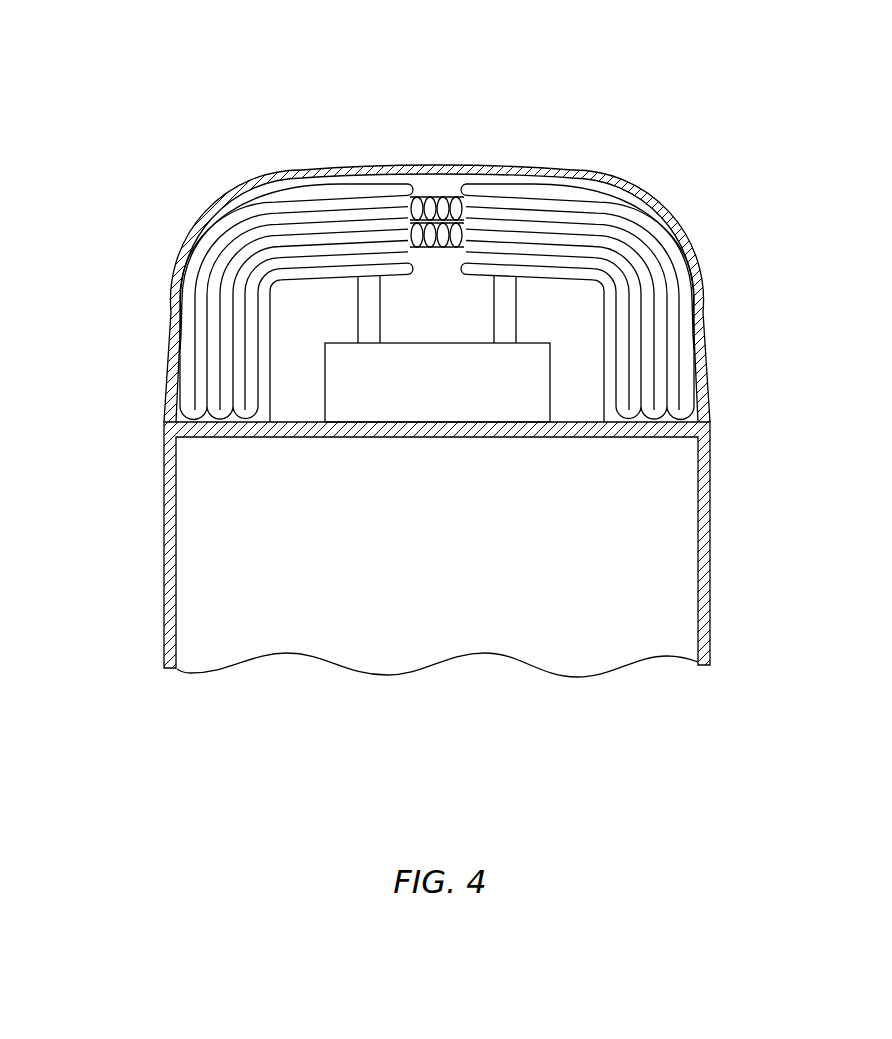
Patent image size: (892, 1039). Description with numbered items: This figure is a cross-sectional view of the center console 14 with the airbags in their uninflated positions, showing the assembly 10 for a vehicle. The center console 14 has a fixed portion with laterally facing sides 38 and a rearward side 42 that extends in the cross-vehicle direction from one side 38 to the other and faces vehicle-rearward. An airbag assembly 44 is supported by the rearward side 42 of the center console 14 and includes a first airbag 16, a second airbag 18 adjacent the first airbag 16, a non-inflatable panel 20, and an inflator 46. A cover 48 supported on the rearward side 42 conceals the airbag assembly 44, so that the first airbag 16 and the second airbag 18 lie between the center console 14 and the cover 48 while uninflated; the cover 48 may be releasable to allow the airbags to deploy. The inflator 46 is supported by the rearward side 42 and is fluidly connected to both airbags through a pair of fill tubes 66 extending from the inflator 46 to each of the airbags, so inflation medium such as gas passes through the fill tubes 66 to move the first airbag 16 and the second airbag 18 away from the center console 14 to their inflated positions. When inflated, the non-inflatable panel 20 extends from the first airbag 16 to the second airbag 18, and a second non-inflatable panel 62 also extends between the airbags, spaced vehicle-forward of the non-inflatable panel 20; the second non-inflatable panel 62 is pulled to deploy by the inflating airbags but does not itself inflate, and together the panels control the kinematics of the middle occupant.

The assembly 10 is at (138, 100).
The center console 14 is at (710, 554).
The first airbag 16 is at (600, 218).
The second airbag 18 is at (287, 217).
The non-inflatable panel 20 is at (440, 200).
The sides 38 is at (164, 489).
The rearward side 42 is at (570, 422).
The airbag assembly 44 is at (291, 404).
The inflator 46 is at (446, 390).
The cover 48 is at (553, 172).
The second non-inflatable panel 62 is at (437, 258).
The fill tubes 66 is at (358, 307).